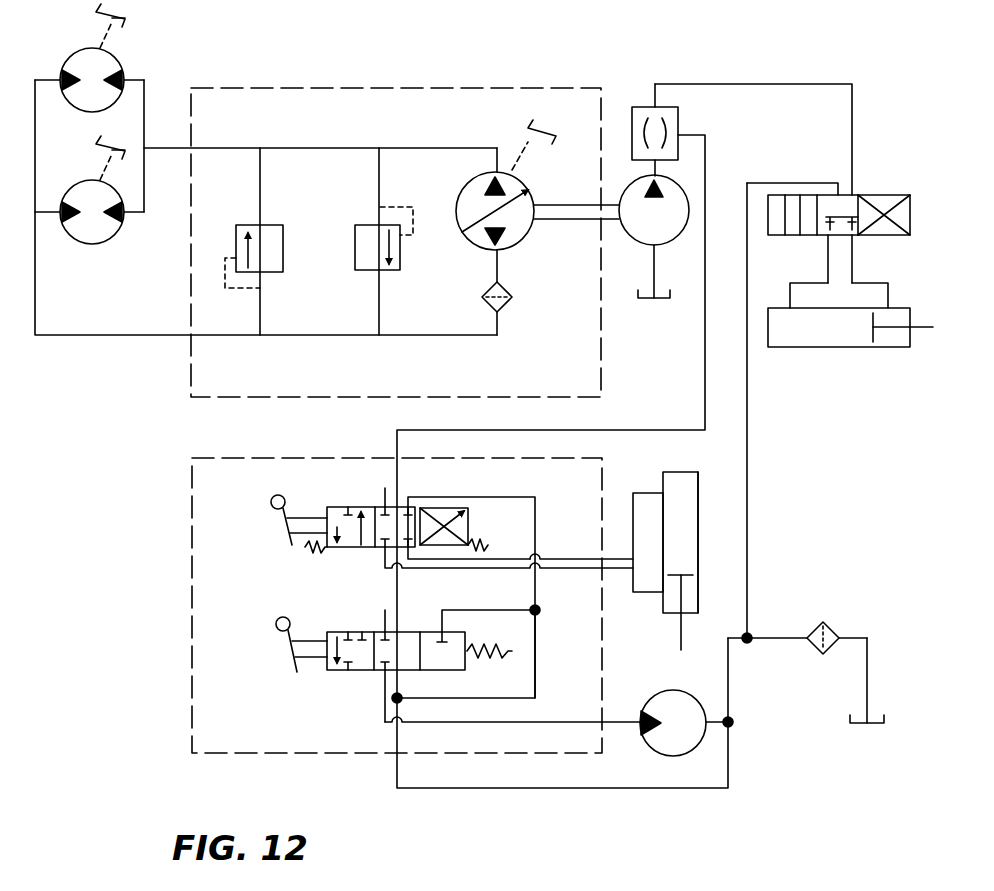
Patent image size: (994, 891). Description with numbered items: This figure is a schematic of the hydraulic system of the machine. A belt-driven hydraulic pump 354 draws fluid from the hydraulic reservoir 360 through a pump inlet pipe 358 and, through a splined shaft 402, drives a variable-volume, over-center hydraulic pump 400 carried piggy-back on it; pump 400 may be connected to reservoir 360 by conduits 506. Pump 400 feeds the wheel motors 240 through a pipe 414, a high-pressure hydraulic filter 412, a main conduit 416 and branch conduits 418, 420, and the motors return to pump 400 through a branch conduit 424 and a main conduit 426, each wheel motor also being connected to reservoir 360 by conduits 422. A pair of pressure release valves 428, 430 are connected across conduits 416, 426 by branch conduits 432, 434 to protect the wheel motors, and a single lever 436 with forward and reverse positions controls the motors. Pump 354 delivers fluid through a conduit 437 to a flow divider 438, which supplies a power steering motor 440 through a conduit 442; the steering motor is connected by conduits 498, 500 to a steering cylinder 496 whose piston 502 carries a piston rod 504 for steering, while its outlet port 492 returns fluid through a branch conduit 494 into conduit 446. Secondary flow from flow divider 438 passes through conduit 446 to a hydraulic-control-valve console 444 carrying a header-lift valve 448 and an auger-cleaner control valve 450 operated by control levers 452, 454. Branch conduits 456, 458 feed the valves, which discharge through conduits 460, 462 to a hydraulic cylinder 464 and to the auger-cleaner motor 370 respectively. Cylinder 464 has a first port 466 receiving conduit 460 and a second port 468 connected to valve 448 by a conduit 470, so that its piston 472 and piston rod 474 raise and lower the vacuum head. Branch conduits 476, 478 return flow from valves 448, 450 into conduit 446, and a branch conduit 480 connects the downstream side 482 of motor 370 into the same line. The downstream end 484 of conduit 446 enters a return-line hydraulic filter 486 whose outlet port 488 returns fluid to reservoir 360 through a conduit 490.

The branch conduit 418 is at (40, 78).
The branch conduit 420 is at (45, 212).
The conduits 422 is at (108, 48).
The wheel motor 240 is at (130, 60).
The hydraulic reservoir 360 is at (128, 18).
The branch conduit 424 is at (148, 100).
The main conduit 426 is at (340, 148).
The pressure release valve 428 is at (268, 225).
The branch conduit 432 is at (256, 312).
The pressure release valve 430 is at (390, 270).
The branch conduit 434 is at (376, 316).
The single lever 436 is at (482, 215).
The variable-volume hydraulic pump 400 is at (524, 184).
The conduits 506 is at (512, 155).
The splined shaft 402 is at (548, 222).
The pipe 414 is at (488, 284).
The high-pressure hydraulic filter 412 is at (508, 315).
The main conduit 416 is at (378, 340).
The flow divider 438 is at (622, 110).
The conduit 442 is at (800, 84).
The conduit 437 is at (668, 170).
The hydraulic pump 354 is at (636, 245).
The pump inlet pipe 358 is at (660, 258).
The branch conduit 494 is at (750, 405).
The outlet port 492 is at (834, 185).
The power steering motor 440 is at (912, 182).
The conduit 498 is at (826, 268).
The conduit 500 is at (855, 258).
The steering cylinder 496 is at (895, 360).
The piston 502 is at (870, 345).
The piston rod 504 is at (928, 325).
The conduit 446 is at (652, 432).
The hydraulic-control-valve console 444 is at (226, 456).
The header-lift valve 448 is at (348, 506).
The control lever 452 is at (272, 507).
The branch conduit 456 is at (385, 488).
The conduit 460 is at (425, 568).
The branch conduit 476 is at (448, 500).
The conduit 470 is at (572, 552).
The first port 466 is at (656, 594).
The second port 468 is at (660, 490).
The hydraulic cylinder 464 is at (700, 512).
The piston 472 is at (690, 572).
The piston rod 474 is at (678, 632).
The branch conduit 478 is at (468, 612).
The branch conduit 458 is at (383, 610).
The auger-cleaner control valve 450 is at (338, 670).
The control lever 454 is at (277, 629).
The conduit 462 is at (436, 724).
The auger-cleaner motor 370 is at (650, 748).
The downstream side 482 is at (702, 740).
The branch conduit 480 is at (733, 728).
The downstream end 484 is at (754, 634).
The return-line hydraulic filter 486 is at (836, 626).
The outlet port 488 is at (832, 650).
The conduit 490 is at (870, 658).